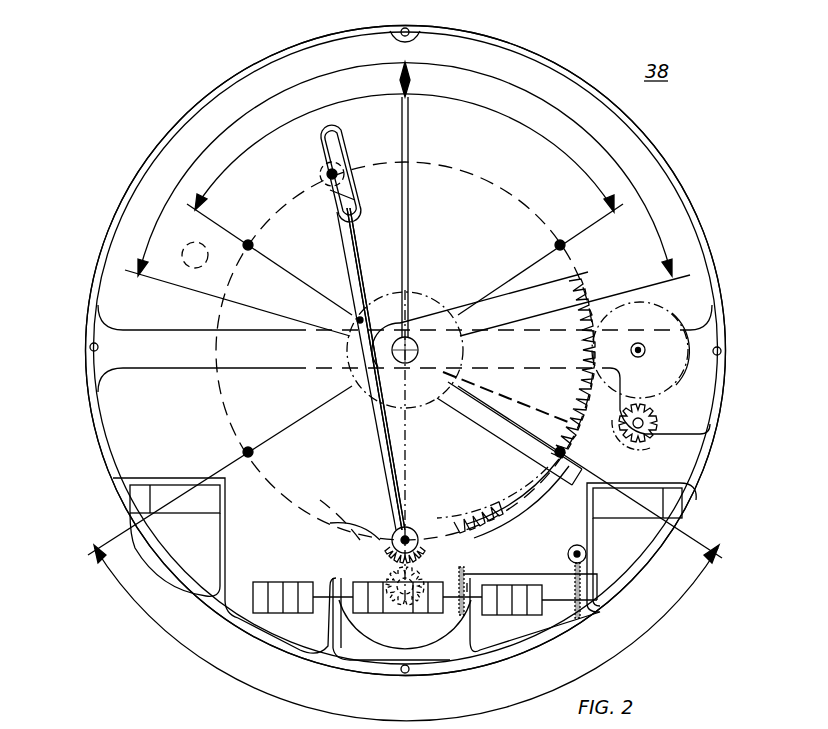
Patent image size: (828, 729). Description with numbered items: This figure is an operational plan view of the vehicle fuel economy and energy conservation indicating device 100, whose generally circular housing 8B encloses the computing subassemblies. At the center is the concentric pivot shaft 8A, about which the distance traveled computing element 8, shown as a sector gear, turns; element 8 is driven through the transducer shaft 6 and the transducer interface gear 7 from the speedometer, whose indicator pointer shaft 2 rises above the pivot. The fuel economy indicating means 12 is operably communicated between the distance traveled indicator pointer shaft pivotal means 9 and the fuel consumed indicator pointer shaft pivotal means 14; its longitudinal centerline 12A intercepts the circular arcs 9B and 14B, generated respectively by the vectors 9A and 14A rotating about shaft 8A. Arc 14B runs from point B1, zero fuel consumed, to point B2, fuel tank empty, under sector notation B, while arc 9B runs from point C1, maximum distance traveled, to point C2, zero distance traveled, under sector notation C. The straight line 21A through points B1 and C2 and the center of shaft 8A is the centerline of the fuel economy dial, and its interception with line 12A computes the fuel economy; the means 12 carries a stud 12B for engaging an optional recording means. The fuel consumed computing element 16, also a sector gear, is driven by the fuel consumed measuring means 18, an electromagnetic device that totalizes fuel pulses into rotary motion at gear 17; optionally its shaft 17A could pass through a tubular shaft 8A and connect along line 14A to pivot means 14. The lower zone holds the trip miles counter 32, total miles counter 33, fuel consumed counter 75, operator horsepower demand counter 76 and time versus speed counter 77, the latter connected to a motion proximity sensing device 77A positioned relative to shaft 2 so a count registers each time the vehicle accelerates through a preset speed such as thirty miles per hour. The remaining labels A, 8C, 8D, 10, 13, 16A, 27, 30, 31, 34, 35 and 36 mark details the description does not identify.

The vehicle fuel economy and energy conservation indicating device 100 is at (180, 83).
The distance traveled functional movement or computing element 8 is at (588, 284).
The concentric pivot shaft 8A is at (414, 360).
The housing 8B is at (706, 220).
The mounting holes 8C is at (408, 28).
The slot in plate 8D is at (207, 372).
The arc A is at (440, 65).
The sector notation b B is at (515, 108).
The sector notation C is at (396, 716).
The point B1 is at (269, 259).
The point B2 is at (553, 247).
The point C1 is at (220, 470).
The point C2 is at (553, 456).
The speedometer indicator pointer shaft 2 is at (410, 121).
The transducer shaft 6 is at (646, 349).
The transducer interface gear 7 is at (686, 378).
The distance traveled indicator pointer shaft pivotal means 9 is at (415, 532).
The vector 9A is at (406, 445).
The circular arc 9B is at (340, 522).
The hub 10 is at (393, 532).
The fuel economy indicating means 12 is at (346, 258).
The longitudinal centerline 12A is at (386, 468).
The stud 12B is at (356, 322).
The loop 13 is at (332, 128).
The fuel consumed indicator pointer shaft pivotal means 14 is at (338, 165).
The vector 14A is at (358, 215).
The circular arc 14B is at (496, 194).
The fuel consumed functional movement or computing element 16 is at (548, 507).
The bearing 16A is at (345, 190).
The gear 17 is at (395, 612).
The shaft 17A is at (414, 610).
The fuel consumed measuring means 18 is at (350, 580).
The straight line 21A is at (556, 428).
The pinion 27 is at (655, 422).
The lead wire 30 is at (488, 575).
The pin 31 is at (575, 546).
The trip miles counter 32 is at (498, 616).
The total miles counter 33 is at (358, 552).
The rod 34 is at (578, 616).
The wire 35 is at (566, 600).
The rod 36 is at (462, 616).
The fuel consumed counter 75 is at (284, 614).
The operator horsepower demand counter 76 is at (204, 512).
The time versus speed counter 77 is at (627, 516).
The motion proximity sensing device 77A is at (192, 244).